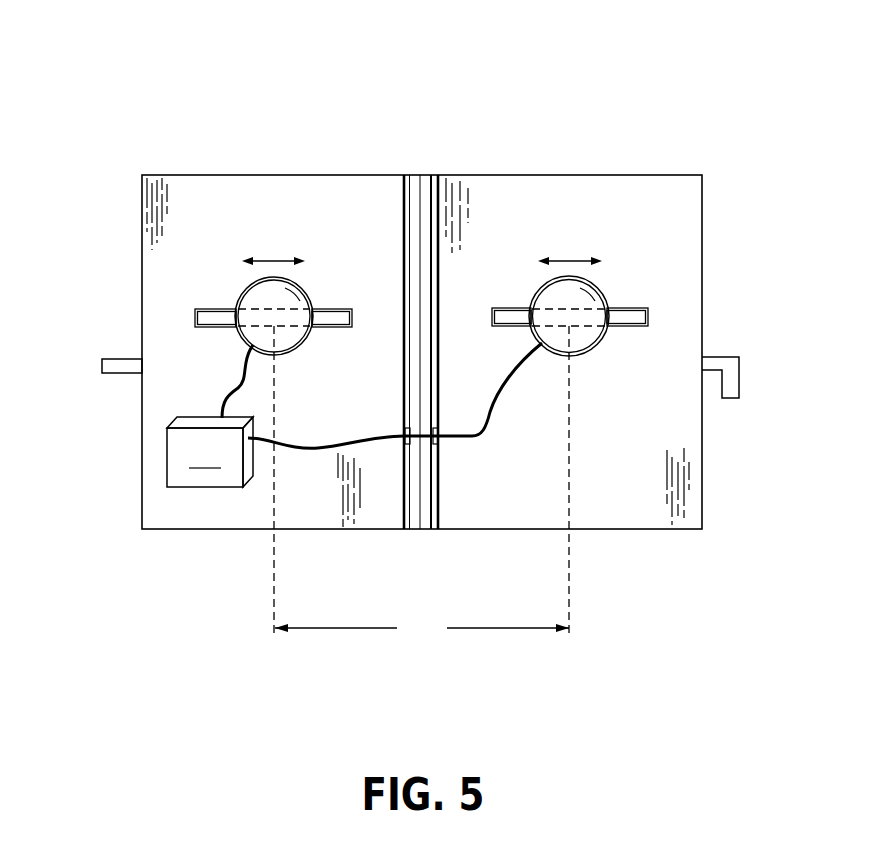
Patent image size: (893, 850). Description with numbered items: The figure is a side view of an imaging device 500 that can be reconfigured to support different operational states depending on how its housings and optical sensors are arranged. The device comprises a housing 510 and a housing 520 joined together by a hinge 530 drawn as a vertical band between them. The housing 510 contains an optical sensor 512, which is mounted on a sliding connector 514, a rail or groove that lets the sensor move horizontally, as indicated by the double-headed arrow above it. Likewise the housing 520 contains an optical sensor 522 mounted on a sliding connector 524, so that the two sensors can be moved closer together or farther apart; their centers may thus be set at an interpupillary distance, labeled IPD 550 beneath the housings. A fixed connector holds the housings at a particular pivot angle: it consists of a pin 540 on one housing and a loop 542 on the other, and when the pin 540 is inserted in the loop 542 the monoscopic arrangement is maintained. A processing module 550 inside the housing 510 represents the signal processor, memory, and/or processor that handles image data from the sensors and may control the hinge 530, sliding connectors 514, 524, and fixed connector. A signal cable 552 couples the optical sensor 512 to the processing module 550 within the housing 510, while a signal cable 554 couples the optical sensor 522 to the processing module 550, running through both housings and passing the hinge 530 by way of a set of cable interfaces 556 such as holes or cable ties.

The imaging device 500 is at (133, 104).
The housing 510 is at (247, 176).
The housing 520 is at (668, 176).
The hinge 530 is at (425, 176).
The optical sensor 512 is at (304, 286).
The sliding connector 514 is at (323, 325).
The optical sensor 522 is at (602, 340).
The sliding connector 524 is at (627, 310).
The pin 540 is at (726, 360).
The loop 542 is at (112, 373).
The processing module 550 is at (368, 532).
The signal cable 552 is at (215, 398).
The signal cable 554 is at (488, 412).
The cable interfaces 556 is at (409, 455).